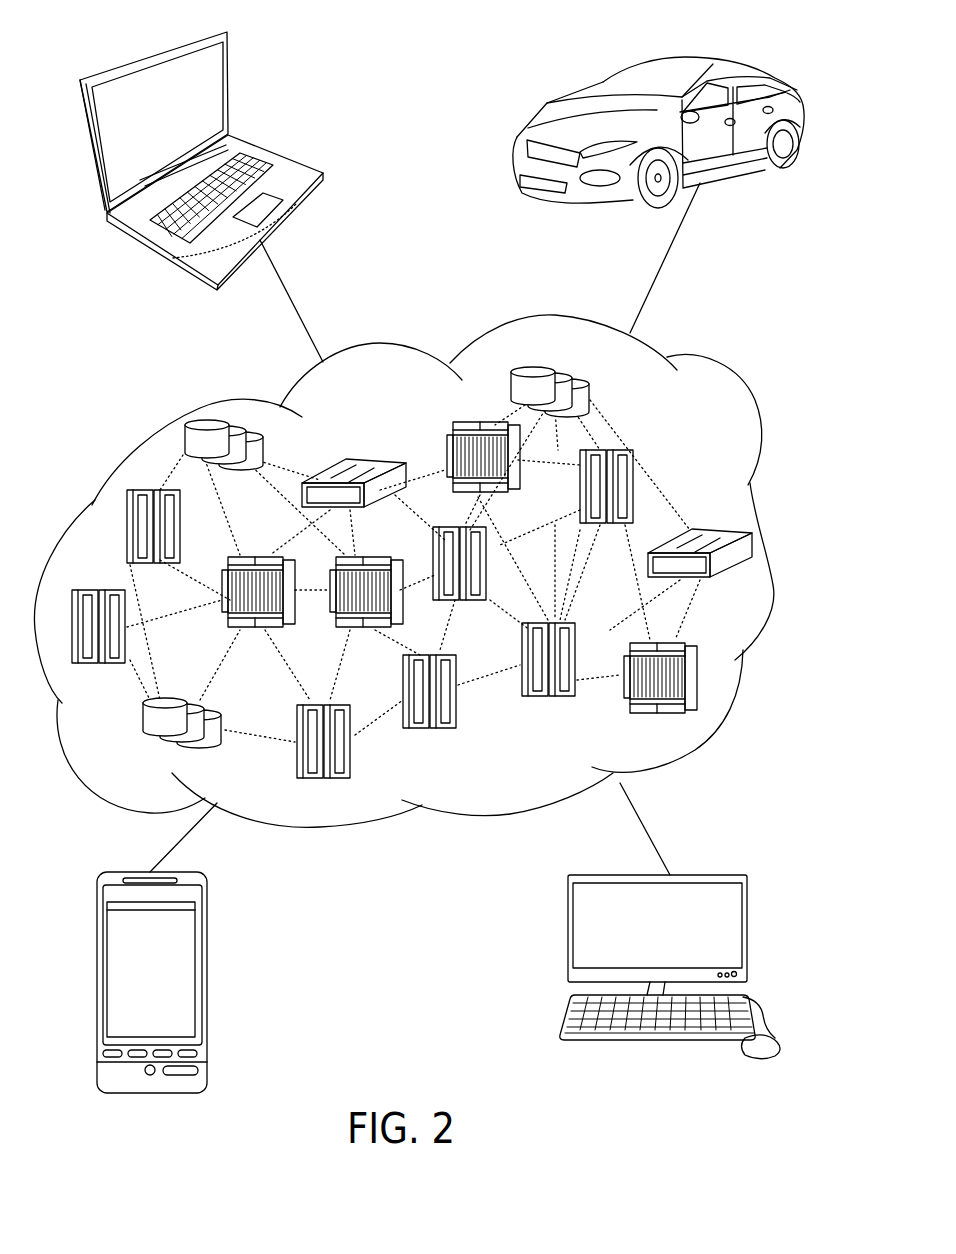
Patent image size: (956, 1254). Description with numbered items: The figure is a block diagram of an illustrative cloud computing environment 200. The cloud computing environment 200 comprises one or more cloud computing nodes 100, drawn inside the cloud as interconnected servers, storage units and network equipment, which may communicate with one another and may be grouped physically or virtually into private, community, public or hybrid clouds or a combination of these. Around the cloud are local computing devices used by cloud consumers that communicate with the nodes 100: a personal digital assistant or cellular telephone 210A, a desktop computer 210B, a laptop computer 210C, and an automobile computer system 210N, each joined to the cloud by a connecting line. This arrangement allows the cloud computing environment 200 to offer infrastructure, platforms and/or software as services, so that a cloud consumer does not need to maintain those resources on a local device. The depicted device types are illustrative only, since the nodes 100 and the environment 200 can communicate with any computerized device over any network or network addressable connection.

The cloud computing node 100 is at (724, 514).
The cloud computing environment 200 is at (728, 380).
The personal digital assistant or cellular telephone 210A is at (240, 873).
The desktop computer 210B is at (787, 872).
The laptop computer 210C is at (283, 157).
The automobile computer system 210N is at (808, 53).